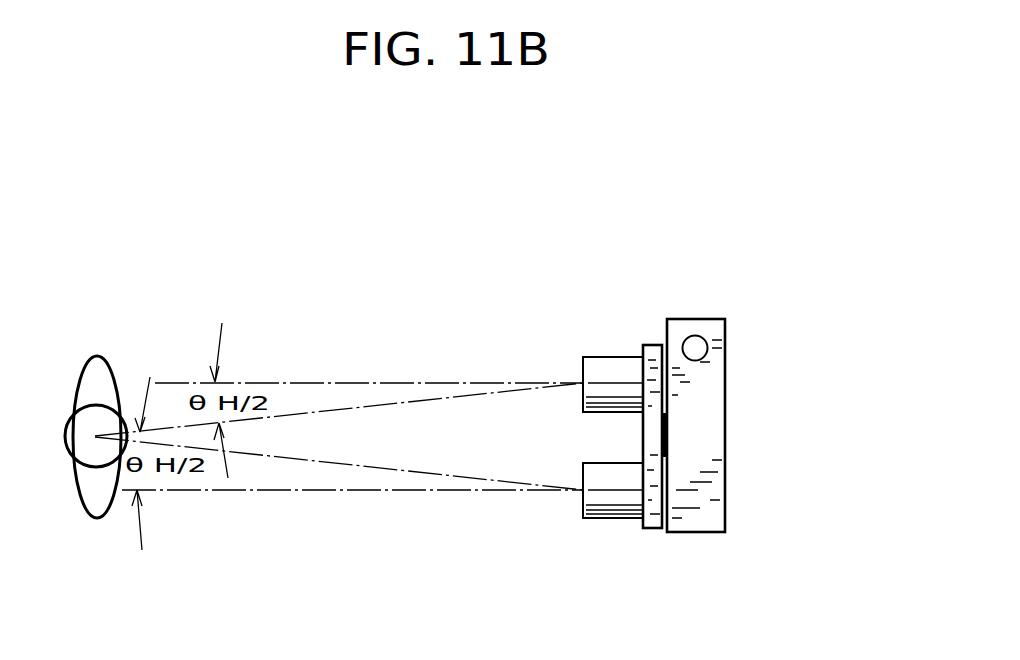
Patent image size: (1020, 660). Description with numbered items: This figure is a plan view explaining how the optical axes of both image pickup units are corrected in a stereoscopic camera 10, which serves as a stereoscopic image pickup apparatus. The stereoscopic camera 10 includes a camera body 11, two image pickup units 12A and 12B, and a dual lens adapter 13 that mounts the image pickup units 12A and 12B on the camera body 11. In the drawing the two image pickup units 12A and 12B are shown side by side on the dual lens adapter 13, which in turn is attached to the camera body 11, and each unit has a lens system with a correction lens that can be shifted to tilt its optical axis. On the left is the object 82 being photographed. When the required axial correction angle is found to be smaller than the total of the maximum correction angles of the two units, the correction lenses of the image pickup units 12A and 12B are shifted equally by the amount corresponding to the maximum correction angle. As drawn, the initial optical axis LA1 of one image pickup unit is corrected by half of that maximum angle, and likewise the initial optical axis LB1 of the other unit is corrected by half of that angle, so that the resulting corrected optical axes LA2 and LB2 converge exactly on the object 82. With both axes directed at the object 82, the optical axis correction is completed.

The stereoscopic camera 10 is at (643, 252).
The camera body 11 is at (690, 318).
The image pickup unit 12A is at (612, 356).
The image pickup unit 12B is at (612, 519).
The dual lens adapter 13 is at (653, 530).
The object 82 is at (100, 356).
The initial optical axis LA1 is at (450, 380).
The optical axis LA2 is at (338, 408).
The initial optical axis LB1 is at (447, 492).
The optical axis LB2 is at (310, 462).